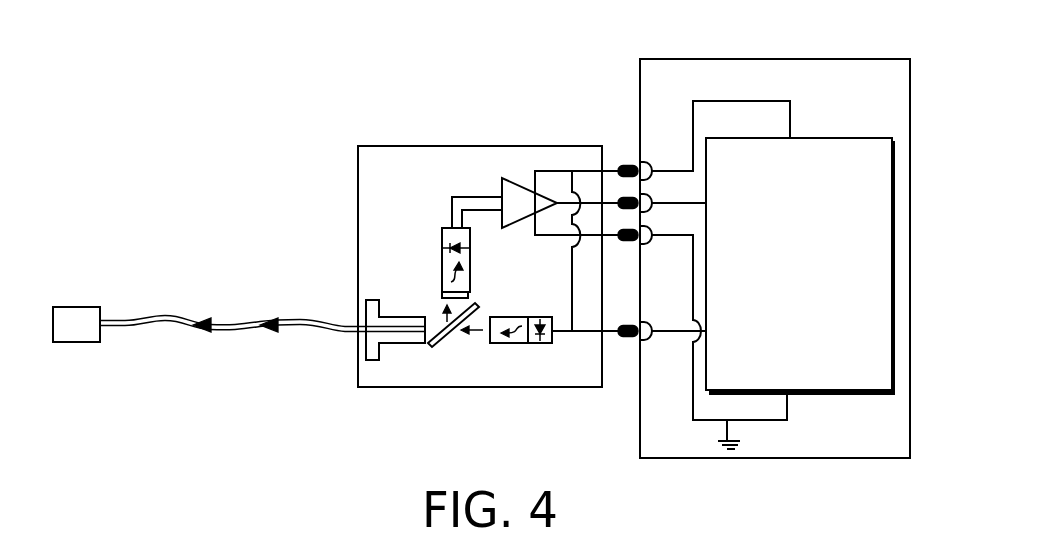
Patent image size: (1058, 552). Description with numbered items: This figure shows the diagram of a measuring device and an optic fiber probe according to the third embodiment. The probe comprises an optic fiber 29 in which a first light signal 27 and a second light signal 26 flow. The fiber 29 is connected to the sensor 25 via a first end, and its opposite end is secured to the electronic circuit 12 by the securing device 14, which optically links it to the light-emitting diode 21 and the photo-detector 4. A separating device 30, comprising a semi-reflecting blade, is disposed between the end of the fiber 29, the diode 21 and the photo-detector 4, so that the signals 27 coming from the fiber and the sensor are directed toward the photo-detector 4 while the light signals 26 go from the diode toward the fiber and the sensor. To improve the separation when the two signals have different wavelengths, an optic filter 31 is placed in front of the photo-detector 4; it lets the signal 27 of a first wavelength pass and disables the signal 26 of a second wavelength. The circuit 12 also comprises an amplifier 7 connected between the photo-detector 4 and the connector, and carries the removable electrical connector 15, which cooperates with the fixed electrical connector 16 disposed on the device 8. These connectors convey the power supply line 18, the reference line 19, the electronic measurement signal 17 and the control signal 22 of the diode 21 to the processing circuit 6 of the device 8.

The photo-detector 4 is at (440, 228).
The processing circuit 6 is at (848, 138).
The amplifier 7 is at (507, 178).
The device 8 is at (826, 59).
The electronic circuit 12 is at (388, 146).
The maintaining device 14 is at (360, 305).
The removable electrical connector 15 is at (622, 164).
The fixed electrical connector 16 is at (650, 162).
The electronic measurement signal 17 is at (668, 200).
The power supply line 18 is at (555, 170).
The reference line 19 is at (790, 416).
The light-emitting diode 21 is at (508, 345).
The control signal 22 is at (583, 338).
The sensor 25 is at (78, 318).
The second light signal 26 is at (272, 318).
The first light signal 27 is at (203, 318).
The optic fiber 29 is at (137, 317).
The separating device 30 is at (445, 355).
The optic filter 31 is at (442, 293).